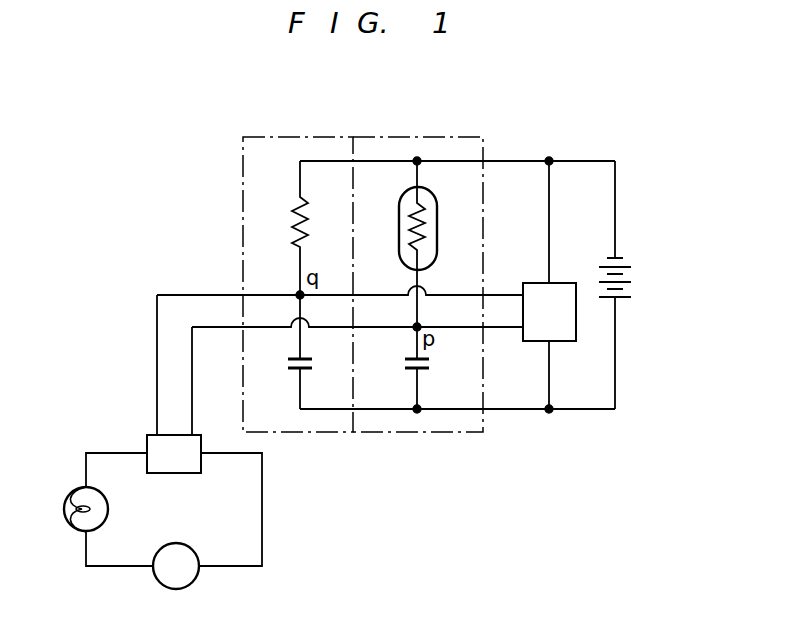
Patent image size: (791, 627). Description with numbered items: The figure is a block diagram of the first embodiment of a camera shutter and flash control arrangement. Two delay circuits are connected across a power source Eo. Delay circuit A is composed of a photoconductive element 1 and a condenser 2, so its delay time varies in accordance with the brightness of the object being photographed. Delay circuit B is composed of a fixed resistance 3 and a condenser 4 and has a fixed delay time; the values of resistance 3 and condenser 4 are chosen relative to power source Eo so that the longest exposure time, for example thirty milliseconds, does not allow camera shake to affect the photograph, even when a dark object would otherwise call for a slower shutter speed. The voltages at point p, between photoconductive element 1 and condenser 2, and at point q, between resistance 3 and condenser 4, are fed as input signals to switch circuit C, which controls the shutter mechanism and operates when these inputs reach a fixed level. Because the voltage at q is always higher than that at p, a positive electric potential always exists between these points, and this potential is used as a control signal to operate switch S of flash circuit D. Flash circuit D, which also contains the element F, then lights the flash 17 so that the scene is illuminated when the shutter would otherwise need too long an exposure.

The photoconductive element 1 is at (437, 201).
The condenser 2 is at (420, 368).
The fixed resistance 3 is at (305, 228).
The condenser 4 is at (303, 352).
The flash 17 is at (68, 527).
The delay circuit A is at (456, 146).
The delay circuit B is at (272, 146).
The switch circuit C is at (564, 283).
The flash circuit D is at (186, 523).
The switch S is at (147, 440).
The power source F is at (176, 566).
The power source Eo is at (627, 285).